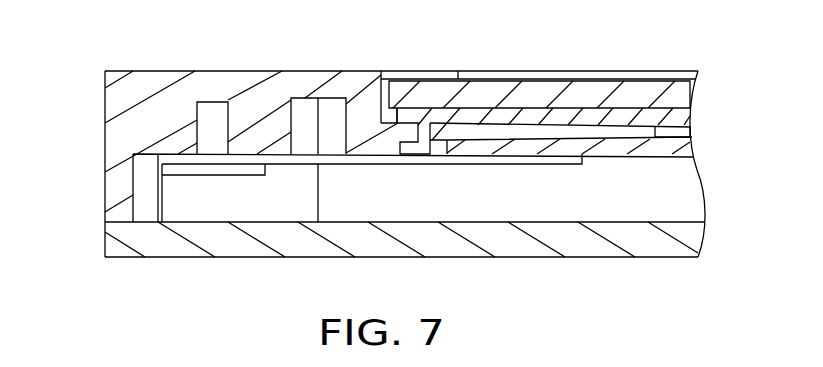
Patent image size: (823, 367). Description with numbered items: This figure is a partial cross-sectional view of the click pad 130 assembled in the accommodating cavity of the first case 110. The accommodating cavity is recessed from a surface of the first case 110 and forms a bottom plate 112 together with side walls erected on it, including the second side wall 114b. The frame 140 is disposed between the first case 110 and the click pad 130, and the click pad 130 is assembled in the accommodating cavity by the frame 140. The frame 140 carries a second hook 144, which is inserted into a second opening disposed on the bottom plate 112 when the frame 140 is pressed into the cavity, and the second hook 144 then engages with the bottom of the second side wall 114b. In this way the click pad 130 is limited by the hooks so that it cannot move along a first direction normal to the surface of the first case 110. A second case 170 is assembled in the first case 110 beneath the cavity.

The first case 110 is at (120, 136).
The bottom plate 112 is at (687, 148).
The second side wall 114b is at (362, 122).
The click pad 130 is at (551, 105).
The frame 140 is at (492, 118).
The second hook 144 is at (424, 150).
The second case 170 is at (118, 235).